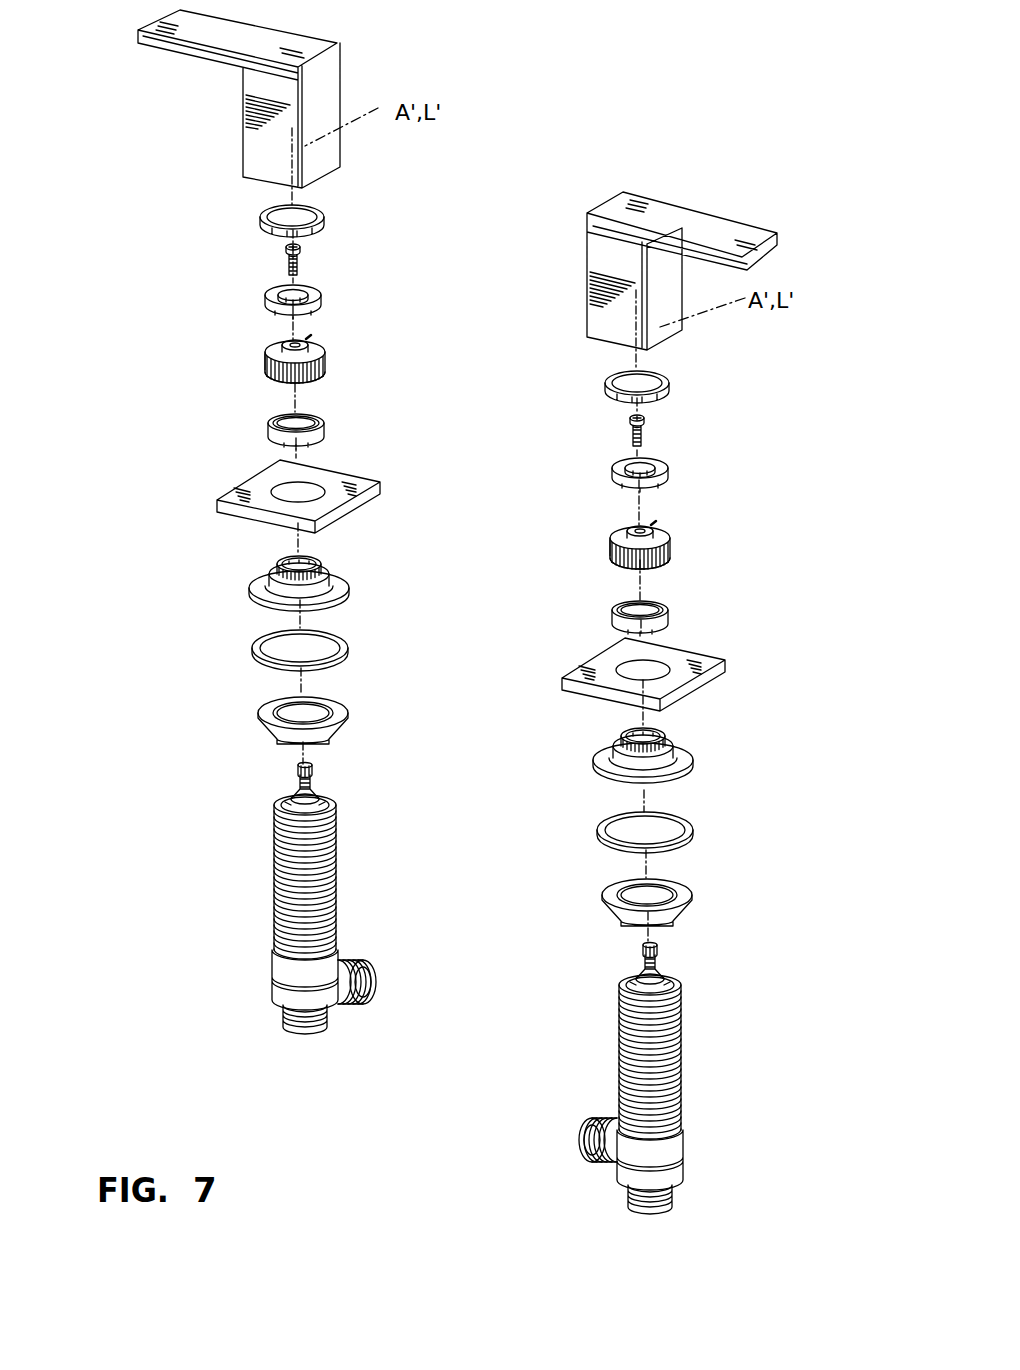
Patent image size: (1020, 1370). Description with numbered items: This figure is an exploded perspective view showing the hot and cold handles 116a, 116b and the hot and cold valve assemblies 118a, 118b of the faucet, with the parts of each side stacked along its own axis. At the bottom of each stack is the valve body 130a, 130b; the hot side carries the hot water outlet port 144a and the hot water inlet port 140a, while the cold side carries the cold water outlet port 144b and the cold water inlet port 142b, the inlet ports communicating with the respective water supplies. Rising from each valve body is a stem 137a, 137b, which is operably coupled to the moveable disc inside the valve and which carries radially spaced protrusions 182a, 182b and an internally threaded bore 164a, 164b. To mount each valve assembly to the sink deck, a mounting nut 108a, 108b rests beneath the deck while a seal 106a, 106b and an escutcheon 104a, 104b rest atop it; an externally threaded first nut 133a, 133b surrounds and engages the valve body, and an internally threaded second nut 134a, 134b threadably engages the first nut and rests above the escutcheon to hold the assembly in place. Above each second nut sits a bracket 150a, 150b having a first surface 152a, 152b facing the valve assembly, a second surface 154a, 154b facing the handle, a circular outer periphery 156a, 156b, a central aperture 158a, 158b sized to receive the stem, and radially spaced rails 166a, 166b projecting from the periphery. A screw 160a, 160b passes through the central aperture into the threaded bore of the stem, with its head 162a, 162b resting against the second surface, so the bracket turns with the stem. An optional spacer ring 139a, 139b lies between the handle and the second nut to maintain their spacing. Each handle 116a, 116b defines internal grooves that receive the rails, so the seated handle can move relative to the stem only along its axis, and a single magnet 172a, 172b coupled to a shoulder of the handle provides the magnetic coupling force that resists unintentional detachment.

The hot handle 116a is at (167, 55).
The hot valve assembly 118a is at (120, 856).
The spacer ring 139a is at (325, 220).
The screw 160a is at (286, 262).
The head of screw 162a is at (300, 248).
The magnet 172a is at (266, 296).
The bracket 150a is at (268, 352).
The outer periphery 156a is at (326, 362).
The second surface 154a is at (268, 358).
The central aperture 158a is at (308, 333).
The rails 166a is at (268, 375).
The first surface 152a is at (326, 380).
The second nut 134a is at (268, 426).
The escutcheon 104a is at (222, 494).
The first nut 133a is at (250, 587).
The seal 106a is at (347, 650).
The mounting nut 108a is at (258, 718).
The internally threaded bore 164a is at (346, 776).
The protrusions 182a is at (296, 775).
The stem 137a is at (322, 782).
The valve body 130a is at (280, 905).
The hot water outlet port 144a is at (376, 995).
The hot water inlet port 140a is at (313, 1045).
The cold handle 116b is at (712, 226).
The cold valve assembly 118b is at (773, 1020).
The spacer ring 139b is at (672, 383).
The screw 160b is at (630, 432).
The head of screw 162b is at (647, 423).
The magnet 172b is at (612, 468).
The bracket 150b is at (612, 530).
The outer periphery 156b is at (672, 546).
The second surface 154b is at (612, 542).
The central aperture 158b is at (660, 513).
The rails 166b is at (612, 558).
The first surface 152b is at (670, 562).
The second nut 134b is at (670, 608).
The escutcheon 104b is at (722, 660).
The first nut 133b is at (692, 765).
The seal 106b is at (693, 832).
The mounting nut 108b is at (605, 905).
The internally threaded bore 164b is at (690, 955).
The protrusions 182b is at (641, 955).
The stem 137b is at (667, 963).
The valve body 130b is at (682, 1108).
The cold water outlet port 144b is at (585, 1135).
The cold water inlet port 142b is at (642, 1214).